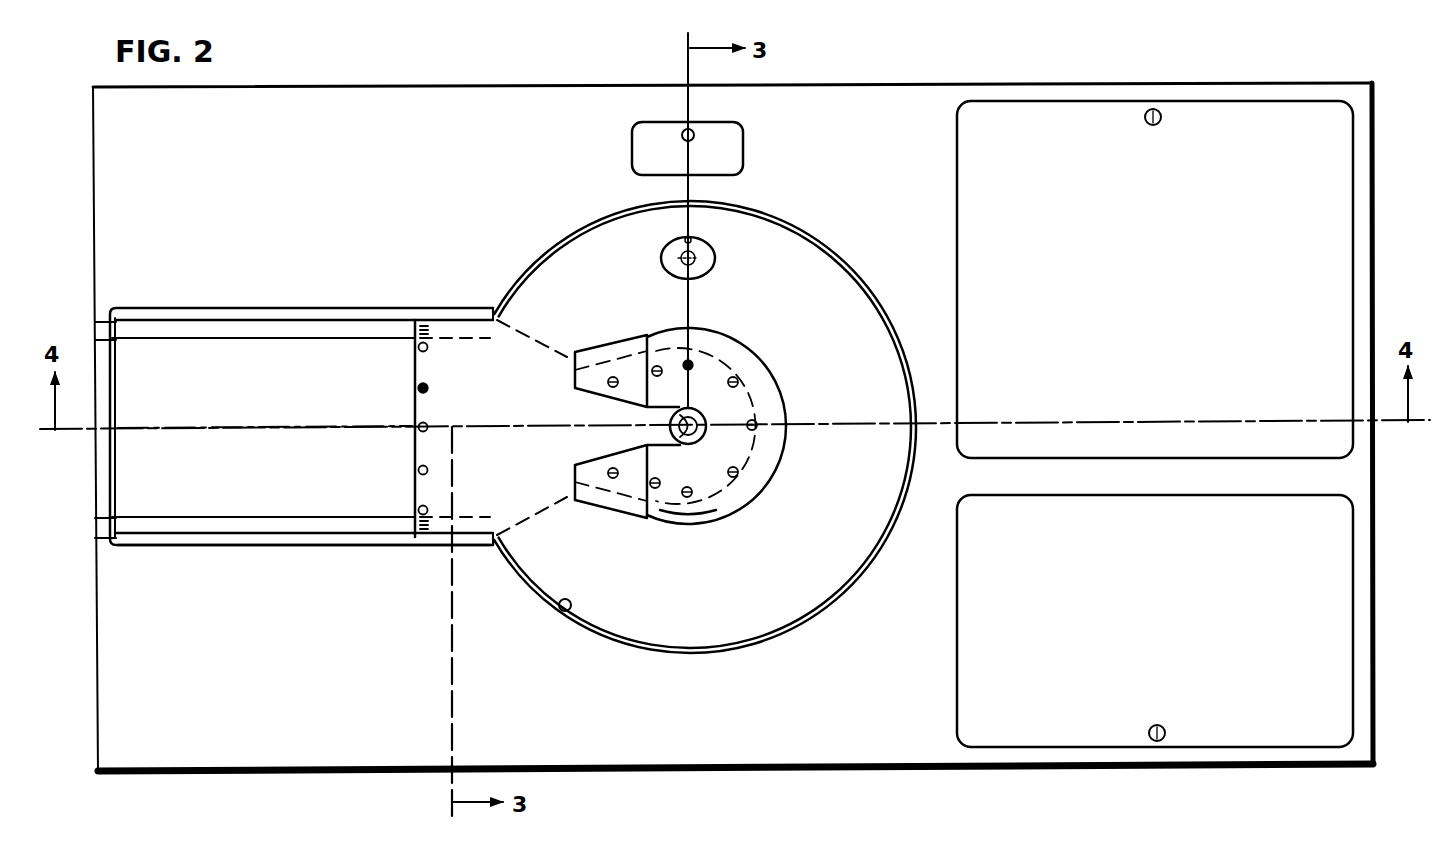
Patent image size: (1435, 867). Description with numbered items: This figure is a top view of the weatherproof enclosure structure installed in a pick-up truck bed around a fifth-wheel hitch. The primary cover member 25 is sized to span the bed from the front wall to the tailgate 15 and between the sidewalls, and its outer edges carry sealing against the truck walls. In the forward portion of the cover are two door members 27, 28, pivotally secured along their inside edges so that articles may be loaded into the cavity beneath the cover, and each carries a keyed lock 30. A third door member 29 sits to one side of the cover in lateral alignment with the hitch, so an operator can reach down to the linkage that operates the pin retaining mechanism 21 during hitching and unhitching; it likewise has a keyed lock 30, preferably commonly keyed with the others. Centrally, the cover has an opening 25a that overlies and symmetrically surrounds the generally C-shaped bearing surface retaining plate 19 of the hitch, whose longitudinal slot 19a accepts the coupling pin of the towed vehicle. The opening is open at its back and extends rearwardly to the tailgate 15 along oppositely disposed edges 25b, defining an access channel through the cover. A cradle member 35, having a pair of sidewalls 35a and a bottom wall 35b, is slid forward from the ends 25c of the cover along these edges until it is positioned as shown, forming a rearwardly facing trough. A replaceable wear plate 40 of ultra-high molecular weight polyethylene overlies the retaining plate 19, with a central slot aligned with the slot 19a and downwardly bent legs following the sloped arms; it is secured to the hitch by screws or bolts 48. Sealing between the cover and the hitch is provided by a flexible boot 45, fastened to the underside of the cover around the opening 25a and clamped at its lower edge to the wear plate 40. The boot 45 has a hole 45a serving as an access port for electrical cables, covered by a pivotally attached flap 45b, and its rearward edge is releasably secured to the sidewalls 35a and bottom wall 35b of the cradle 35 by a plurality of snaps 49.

The tailgate 15 is at (103, 512).
The bearing surface retaining plate 19 is at (760, 387).
The longitudinal slot 19a is at (578, 451).
The pin retaining mechanism 21 is at (710, 434).
The primary cover member 25 is at (852, 748).
The opening 25a is at (560, 607).
The oppositely disposed edges 25b is at (200, 536).
The ends of the cover 25c is at (113, 455).
The door member 27 is at (1270, 118).
The door member 28 is at (1062, 750).
The third door member 29 is at (755, 138).
The keyed lock 30 is at (692, 133).
The cradle member 35 is at (333, 352).
The cradle sidewalls 35a is at (252, 325).
The cradle bottom wall 35b is at (246, 473).
The wear plate 40 is at (687, 521).
The boot 45 is at (860, 313).
The access port hole 45a is at (705, 259).
The flap 45b is at (661, 259).
The screws or bolts 48 is at (737, 378).
The snaps 49 is at (421, 386).